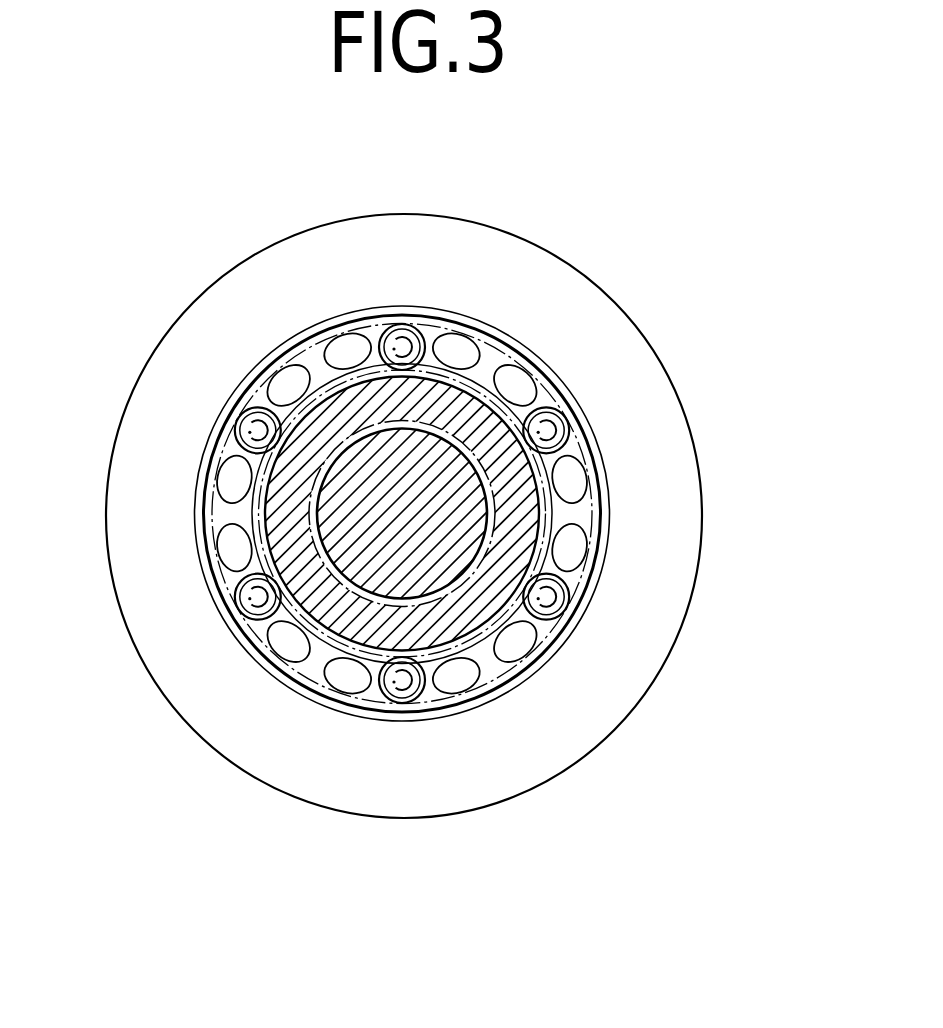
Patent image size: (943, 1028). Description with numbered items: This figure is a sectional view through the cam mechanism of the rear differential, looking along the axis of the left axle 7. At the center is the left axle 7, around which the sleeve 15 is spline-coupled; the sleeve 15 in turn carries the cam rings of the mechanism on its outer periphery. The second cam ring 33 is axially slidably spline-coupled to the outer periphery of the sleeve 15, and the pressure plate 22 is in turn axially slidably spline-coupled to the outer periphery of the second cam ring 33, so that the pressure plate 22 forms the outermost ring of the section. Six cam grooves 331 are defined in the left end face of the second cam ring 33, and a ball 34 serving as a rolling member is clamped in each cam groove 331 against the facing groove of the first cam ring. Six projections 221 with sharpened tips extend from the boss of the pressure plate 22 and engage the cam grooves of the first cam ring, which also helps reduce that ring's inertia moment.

The left axle 7 is at (408, 548).
The sleeve 15 is at (342, 408).
The pressure plate 22 is at (593, 282).
The projections 221 is at (703, 380).
The second cam ring 33 is at (503, 677).
The cam grooves 331 is at (708, 455).
The balls 34 is at (414, 328).